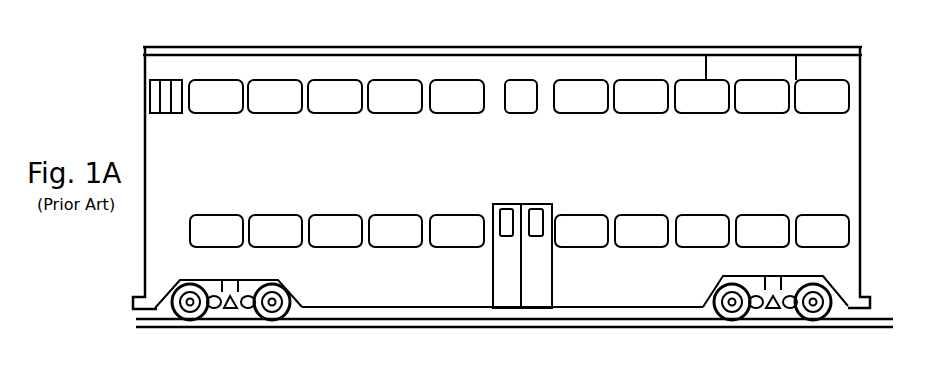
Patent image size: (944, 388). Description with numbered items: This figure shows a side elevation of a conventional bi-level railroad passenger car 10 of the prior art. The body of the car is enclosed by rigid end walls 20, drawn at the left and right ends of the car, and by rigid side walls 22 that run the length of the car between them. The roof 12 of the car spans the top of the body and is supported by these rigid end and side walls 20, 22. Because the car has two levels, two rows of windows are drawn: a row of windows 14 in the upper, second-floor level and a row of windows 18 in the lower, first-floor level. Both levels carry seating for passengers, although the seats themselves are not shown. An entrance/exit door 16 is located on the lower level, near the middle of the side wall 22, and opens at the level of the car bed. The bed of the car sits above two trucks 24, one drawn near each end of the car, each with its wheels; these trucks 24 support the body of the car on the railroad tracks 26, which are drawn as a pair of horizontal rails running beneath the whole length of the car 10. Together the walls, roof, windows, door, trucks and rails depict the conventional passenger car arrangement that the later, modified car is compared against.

The conventional bi-level railroad passenger car 10 is at (537, 154).
The roof of car 12 is at (226, 47).
The windows (second floor) 14 is at (213, 115).
The entrance/exit door (first floor) 16 is at (521, 204).
The windows (first floor) 18 is at (213, 215).
The rigid end walls 20 is at (146, 170).
The rigid side walls 22 is at (425, 131).
The trucks 24 is at (232, 310).
The railroad tracks 26 is at (153, 329).